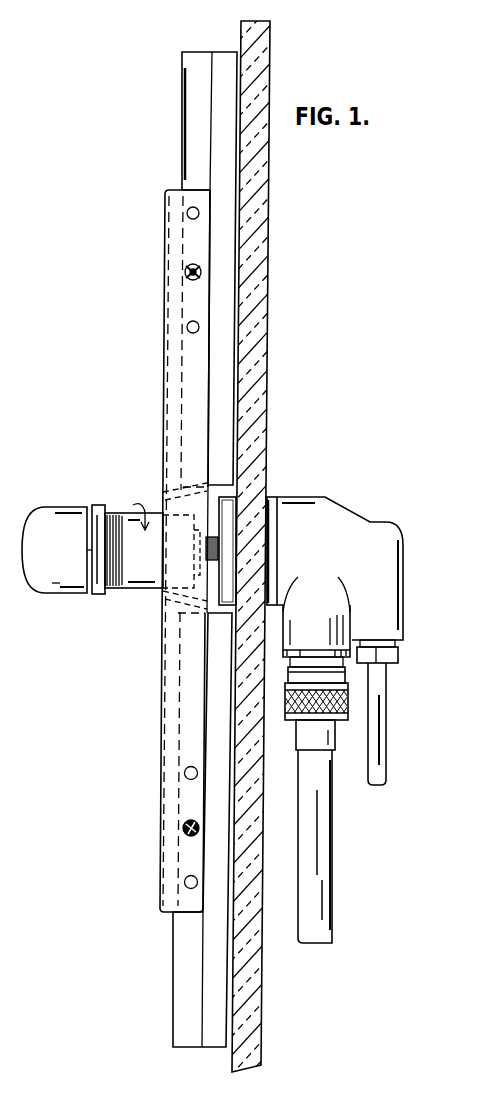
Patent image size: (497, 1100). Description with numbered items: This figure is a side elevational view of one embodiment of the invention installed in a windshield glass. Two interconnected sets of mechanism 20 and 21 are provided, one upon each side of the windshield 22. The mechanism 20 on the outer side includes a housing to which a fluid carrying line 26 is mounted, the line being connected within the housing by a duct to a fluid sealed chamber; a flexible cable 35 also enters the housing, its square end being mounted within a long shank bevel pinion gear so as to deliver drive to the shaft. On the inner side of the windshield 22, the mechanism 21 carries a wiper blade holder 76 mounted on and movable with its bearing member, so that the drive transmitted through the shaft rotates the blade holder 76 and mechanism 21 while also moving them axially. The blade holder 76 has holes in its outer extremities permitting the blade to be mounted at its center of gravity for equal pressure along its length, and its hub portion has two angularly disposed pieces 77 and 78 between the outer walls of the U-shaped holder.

The mechanism 20 is at (345, 483).
The mechanism 21 is at (71, 474).
The windshield 22 is at (262, 369).
The fluid carrying line 26 is at (387, 763).
The flexible cable 35 is at (333, 882).
The wiper blade holder 76 is at (165, 712).
The angularly disposed piece 77 is at (163, 488).
The angularly disposed piece 78 is at (160, 603).